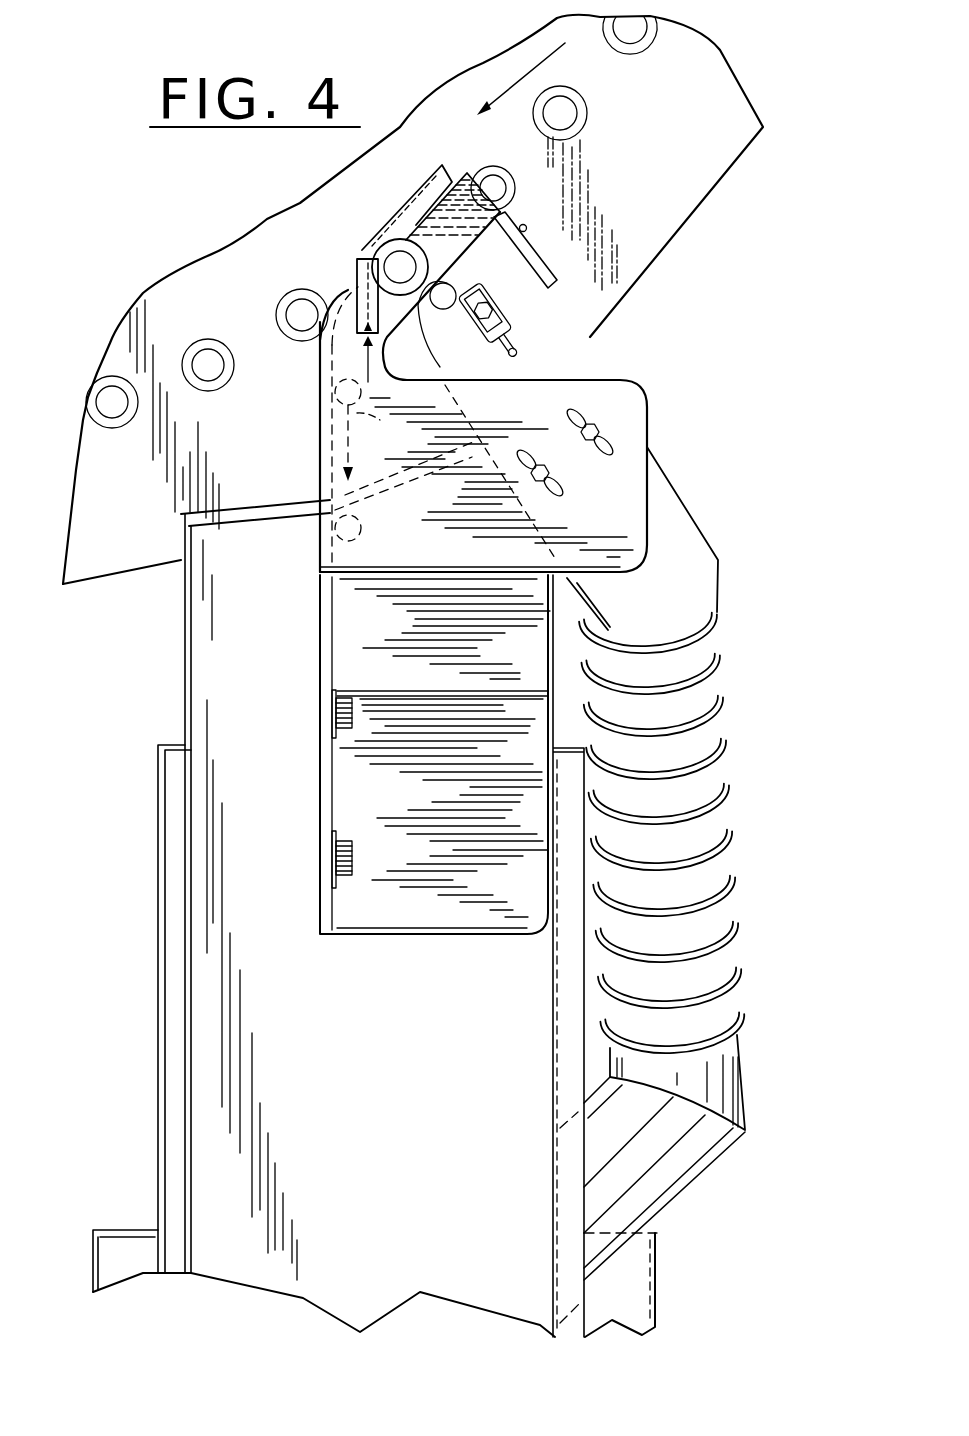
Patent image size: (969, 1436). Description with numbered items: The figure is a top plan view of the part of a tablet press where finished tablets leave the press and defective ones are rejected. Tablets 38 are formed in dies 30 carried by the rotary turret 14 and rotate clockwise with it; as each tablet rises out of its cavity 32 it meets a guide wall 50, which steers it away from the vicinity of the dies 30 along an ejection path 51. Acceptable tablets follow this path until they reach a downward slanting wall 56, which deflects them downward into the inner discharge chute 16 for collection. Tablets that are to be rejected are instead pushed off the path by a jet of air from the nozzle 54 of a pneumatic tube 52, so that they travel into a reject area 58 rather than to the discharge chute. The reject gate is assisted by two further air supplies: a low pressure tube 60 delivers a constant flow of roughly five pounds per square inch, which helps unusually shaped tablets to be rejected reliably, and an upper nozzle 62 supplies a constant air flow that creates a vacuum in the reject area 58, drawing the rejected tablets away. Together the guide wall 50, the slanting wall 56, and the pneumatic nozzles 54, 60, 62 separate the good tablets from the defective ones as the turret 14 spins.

The rotary turret 14 is at (712, 160).
The inner discharge chute 16 is at (252, 938).
The dies 30 is at (630, 37).
The cavity 32 is at (578, 112).
The tablets 38 is at (487, 166).
The guide wall 50 is at (348, 290).
The ejection path 51 is at (414, 450).
The pneumatic tube 52 is at (355, 262).
The nozzle 54 is at (399, 238).
The downward slanting wall 56 is at (357, 636).
The reject area 58 is at (672, 545).
The low pressure tube 60 is at (570, 237).
The upper nozzle 62 is at (500, 312).